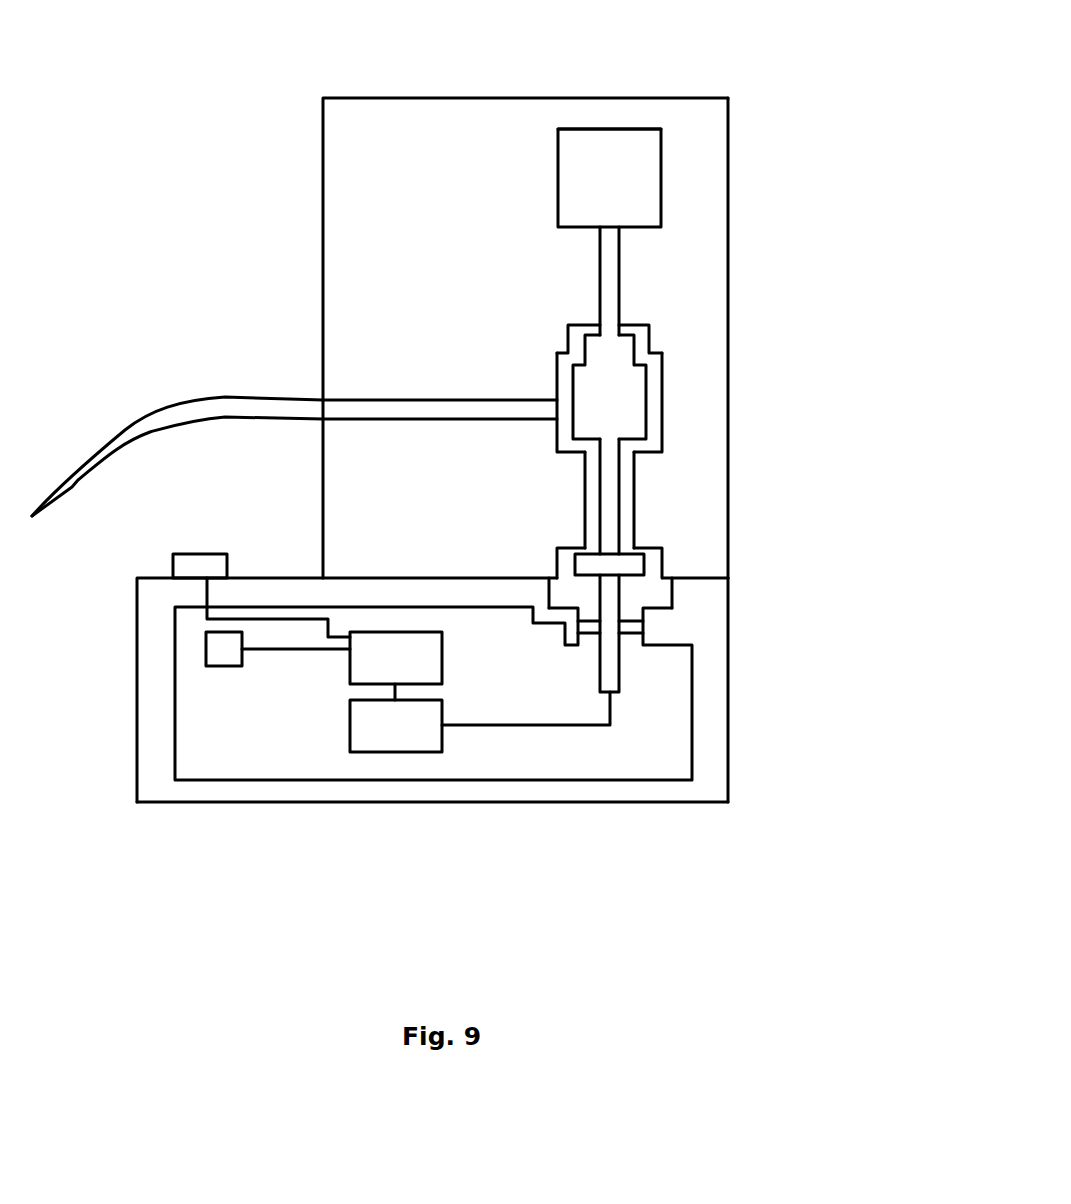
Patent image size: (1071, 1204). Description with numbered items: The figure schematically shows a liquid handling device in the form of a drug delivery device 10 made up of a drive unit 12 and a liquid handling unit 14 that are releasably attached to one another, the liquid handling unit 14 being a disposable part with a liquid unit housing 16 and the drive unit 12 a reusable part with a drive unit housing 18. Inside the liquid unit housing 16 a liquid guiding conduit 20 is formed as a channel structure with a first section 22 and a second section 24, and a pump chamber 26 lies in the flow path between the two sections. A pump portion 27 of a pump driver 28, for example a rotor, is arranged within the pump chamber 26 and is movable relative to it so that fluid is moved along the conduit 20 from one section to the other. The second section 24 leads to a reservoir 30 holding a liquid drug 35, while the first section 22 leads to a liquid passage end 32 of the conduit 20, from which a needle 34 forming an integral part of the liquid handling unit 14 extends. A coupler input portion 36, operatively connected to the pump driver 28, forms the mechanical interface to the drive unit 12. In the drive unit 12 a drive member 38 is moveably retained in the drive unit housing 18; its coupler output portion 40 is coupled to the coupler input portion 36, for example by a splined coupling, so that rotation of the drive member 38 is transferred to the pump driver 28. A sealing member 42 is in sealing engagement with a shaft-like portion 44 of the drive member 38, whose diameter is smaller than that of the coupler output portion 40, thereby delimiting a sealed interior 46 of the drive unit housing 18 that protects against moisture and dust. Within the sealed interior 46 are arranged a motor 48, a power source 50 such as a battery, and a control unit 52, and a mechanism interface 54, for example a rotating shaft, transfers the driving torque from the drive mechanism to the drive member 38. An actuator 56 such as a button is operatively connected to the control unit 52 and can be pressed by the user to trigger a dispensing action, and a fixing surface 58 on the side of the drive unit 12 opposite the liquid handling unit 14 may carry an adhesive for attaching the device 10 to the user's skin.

The drug delivery device 10 is at (874, 171).
The drive unit 12 is at (714, 743).
The liquid handling unit 14 is at (678, 395).
The liquid unit housing 16 is at (693, 480).
The drive unit housing 18 is at (710, 675).
The liquid guiding conduit 20 is at (608, 285).
The first section 22 is at (440, 403).
The second section 24 is at (608, 243).
The pump chamber 26 is at (652, 368).
The pump portion 27 is at (616, 425).
The pump driver 28 is at (617, 353).
The reservoir 30 is at (635, 182).
The liquid passage end 32 is at (323, 413).
The needle 34 is at (120, 433).
The liquid drug 35 is at (608, 140).
The coupler input portion 36 is at (608, 540).
The drive member 38 is at (610, 618).
The coupler output portion 40 is at (612, 566).
The sealing member 42 is at (630, 630).
The portion of the drive member 44 is at (607, 632).
The sealed interior 46 is at (233, 752).
The motor 48 is at (398, 730).
The power source 50 is at (222, 650).
The control unit 52 is at (372, 658).
The mechanism interface 54 is at (612, 692).
The actuator 56 is at (209, 568).
The fixing surface 58 is at (665, 803).